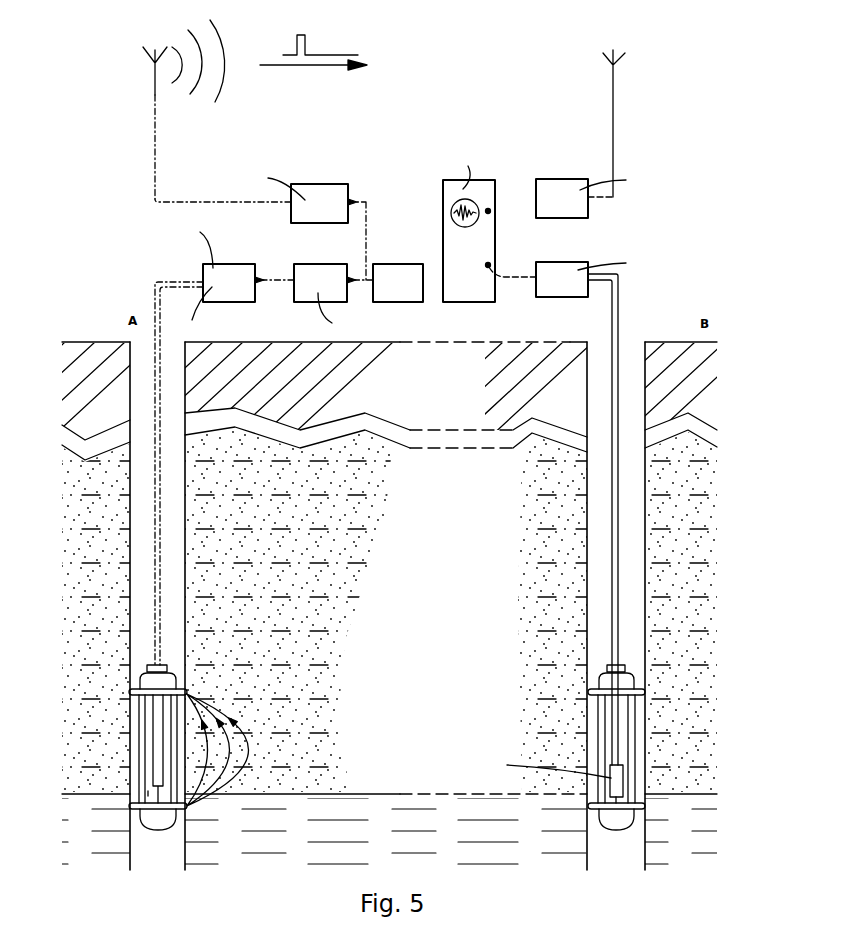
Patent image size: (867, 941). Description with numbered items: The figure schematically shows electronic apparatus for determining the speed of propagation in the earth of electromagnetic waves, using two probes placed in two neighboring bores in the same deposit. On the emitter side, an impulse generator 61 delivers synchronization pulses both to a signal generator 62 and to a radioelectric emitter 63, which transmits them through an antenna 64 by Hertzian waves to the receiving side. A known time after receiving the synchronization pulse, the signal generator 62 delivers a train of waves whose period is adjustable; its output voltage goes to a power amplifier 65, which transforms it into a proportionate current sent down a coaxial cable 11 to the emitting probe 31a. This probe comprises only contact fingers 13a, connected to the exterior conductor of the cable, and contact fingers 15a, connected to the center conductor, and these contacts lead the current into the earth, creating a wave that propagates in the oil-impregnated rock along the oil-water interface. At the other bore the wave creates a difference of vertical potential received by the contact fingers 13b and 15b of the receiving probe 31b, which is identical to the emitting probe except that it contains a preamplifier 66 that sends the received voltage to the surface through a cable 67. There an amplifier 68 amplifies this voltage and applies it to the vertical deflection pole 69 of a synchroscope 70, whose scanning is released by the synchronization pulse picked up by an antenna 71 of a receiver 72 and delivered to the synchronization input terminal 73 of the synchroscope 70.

The antenna 64 is at (155, 88).
The antenna 71 is at (613, 100).
The radioelectric emitter 63 is at (312, 192).
The power amplifier 65 is at (225, 273).
The signal generator 62 is at (312, 277).
The impulse generator 61 is at (392, 275).
The synchroscope 70 is at (452, 252).
The synchronization input terminal 73 is at (490, 210).
The vertical deflection pole 69 is at (490, 265).
The receiver 72 is at (560, 182).
The amplifier 68 is at (553, 273).
The cable 67 is at (619, 556).
The coaxial cable 11 is at (164, 282).
The emitting probe 31a is at (168, 668).
The contact fingers 13a is at (187, 692).
The contact fingers 15a is at (187, 807).
The receiving probe 31b is at (626, 670).
The contact fingers 13b is at (588, 692).
The contact fingers 15b is at (588, 807).
The preamplifier 66 is at (622, 784).